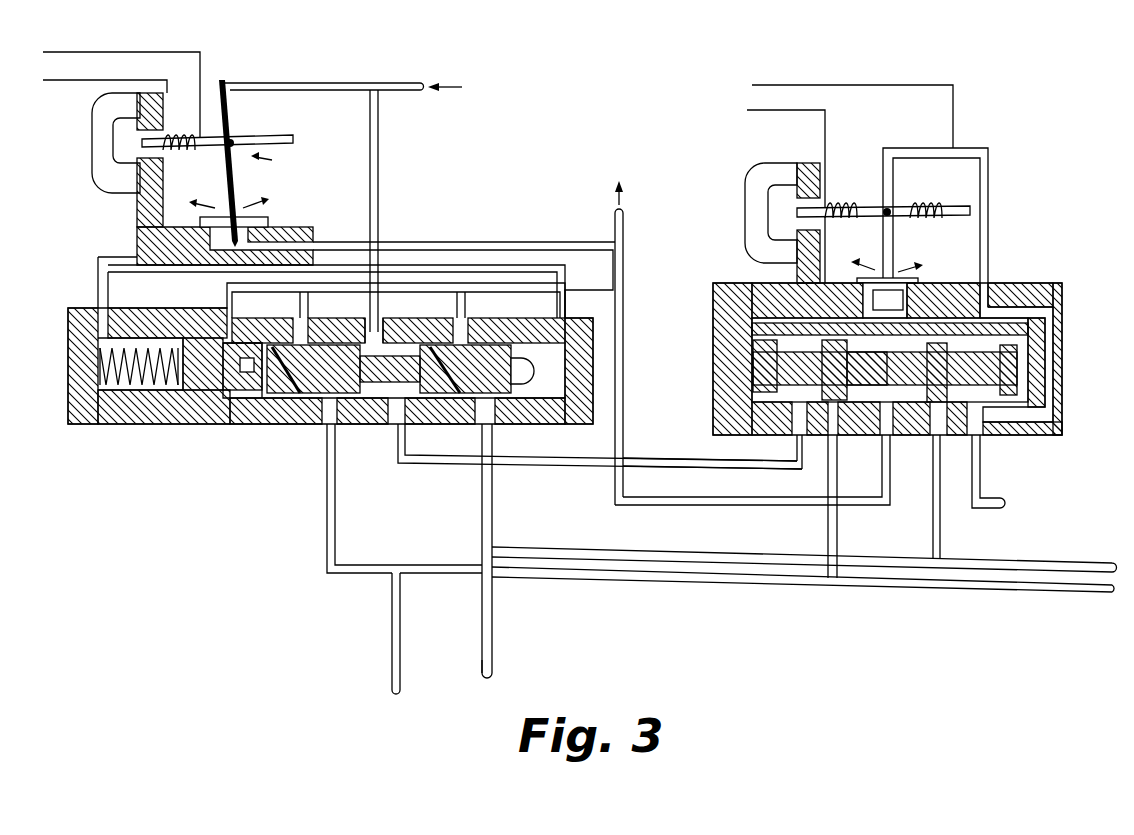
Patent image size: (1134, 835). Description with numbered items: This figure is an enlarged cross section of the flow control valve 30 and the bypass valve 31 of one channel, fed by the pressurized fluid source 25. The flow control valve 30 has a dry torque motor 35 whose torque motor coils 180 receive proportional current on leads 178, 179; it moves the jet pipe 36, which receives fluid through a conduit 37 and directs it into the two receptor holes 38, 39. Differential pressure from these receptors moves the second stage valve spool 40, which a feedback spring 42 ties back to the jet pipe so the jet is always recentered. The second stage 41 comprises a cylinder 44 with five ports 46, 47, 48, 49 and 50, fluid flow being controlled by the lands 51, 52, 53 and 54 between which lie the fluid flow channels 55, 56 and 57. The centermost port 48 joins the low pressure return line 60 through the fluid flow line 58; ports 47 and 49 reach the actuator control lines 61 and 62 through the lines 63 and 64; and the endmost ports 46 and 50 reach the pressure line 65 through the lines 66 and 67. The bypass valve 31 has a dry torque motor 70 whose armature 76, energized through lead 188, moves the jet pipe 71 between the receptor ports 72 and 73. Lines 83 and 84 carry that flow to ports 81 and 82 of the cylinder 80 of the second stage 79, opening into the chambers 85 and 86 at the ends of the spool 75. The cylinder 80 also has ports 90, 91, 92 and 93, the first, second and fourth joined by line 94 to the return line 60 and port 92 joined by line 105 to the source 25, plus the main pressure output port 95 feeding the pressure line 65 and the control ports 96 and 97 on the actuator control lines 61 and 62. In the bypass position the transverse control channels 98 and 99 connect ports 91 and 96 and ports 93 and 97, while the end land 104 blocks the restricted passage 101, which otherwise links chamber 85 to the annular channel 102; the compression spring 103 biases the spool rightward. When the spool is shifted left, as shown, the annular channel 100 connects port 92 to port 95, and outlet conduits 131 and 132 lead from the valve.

The pressurized source of fluid 25 is at (460, 82).
The electro-hydraulic flow control valve 30 is at (1022, 240).
The bypass valve 31 is at (200, 464).
The dry torque motor 35 is at (873, 166).
The jet pipe 36 is at (888, 264).
The conduit 37 is at (986, 215).
The receptor hole 38 is at (850, 322).
The receptor hole 39 is at (993, 301).
The second stage valve spool 40 is at (767, 363).
The second stage 41 is at (706, 305).
The feedback spring 42 is at (885, 368).
The cylinder 44 is at (725, 420).
The endmost port 46 is at (772, 418).
The port 47 is at (816, 419).
The centermost port 48 is at (859, 419).
The port 49 is at (930, 419).
The endmost port 50 is at (993, 438).
The land 51 is at (777, 366).
The land 52 is at (867, 368).
The land 53 is at (972, 372).
The land 54 is at (1020, 385).
The fluid flow channel 55 is at (787, 345).
The fluid flow channel 56 is at (827, 370).
The fluid flow channel 57 is at (1043, 348).
The fluid flow line 58 is at (889, 491).
The low pressure return line 60 is at (623, 265).
The actuator control line 61 is at (887, 590).
The actuator control line 62 is at (963, 558).
The fluid flow line 63 is at (838, 533).
The fluid flow line 64 is at (941, 525).
The pressure line 65 is at (714, 472).
The line 66 is at (797, 448).
The line 67 is at (980, 456).
The dry torque motor 70 is at (244, 180).
The jet pipe 71 is at (240, 192).
The receptor port 72 is at (225, 179).
The receptor port 73 is at (262, 238).
The spool 75 is at (190, 387).
The electrical armature 76 is at (183, 148).
The second stage 79 is at (62, 412).
The cylinder 80 is at (270, 426).
The port 81 is at (68, 330).
The port 82 is at (563, 336).
The line 83 is at (108, 256).
The line 84 is at (533, 267).
The chamber 85 is at (100, 421).
The chamber 86 is at (548, 390).
The port 90 is at (228, 312).
The port 91 is at (305, 322).
The port 92 is at (387, 330).
The port 93 is at (471, 332).
The line 94 is at (447, 268).
The main pressure output port 95 is at (395, 431).
The control port 96 is at (321, 431).
The control port 97 is at (492, 426).
The transverse control channel 98 is at (305, 373).
The transverse control channel 99 is at (442, 367).
The annular channel 100 is at (379, 358).
The restricted passage 101 is at (222, 348).
The annular channel 102 is at (249, 352).
The compression spring 103 is at (100, 382).
The end land 104 is at (170, 336).
The line 105 is at (380, 173).
The outlet conduit 131 is at (392, 662).
The outlet conduit 132 is at (493, 661).
The lead 178 is at (755, 114).
The lead 179 is at (876, 84).
The torque motor coils 180 is at (889, 208).
The lead 188 is at (43, 83).